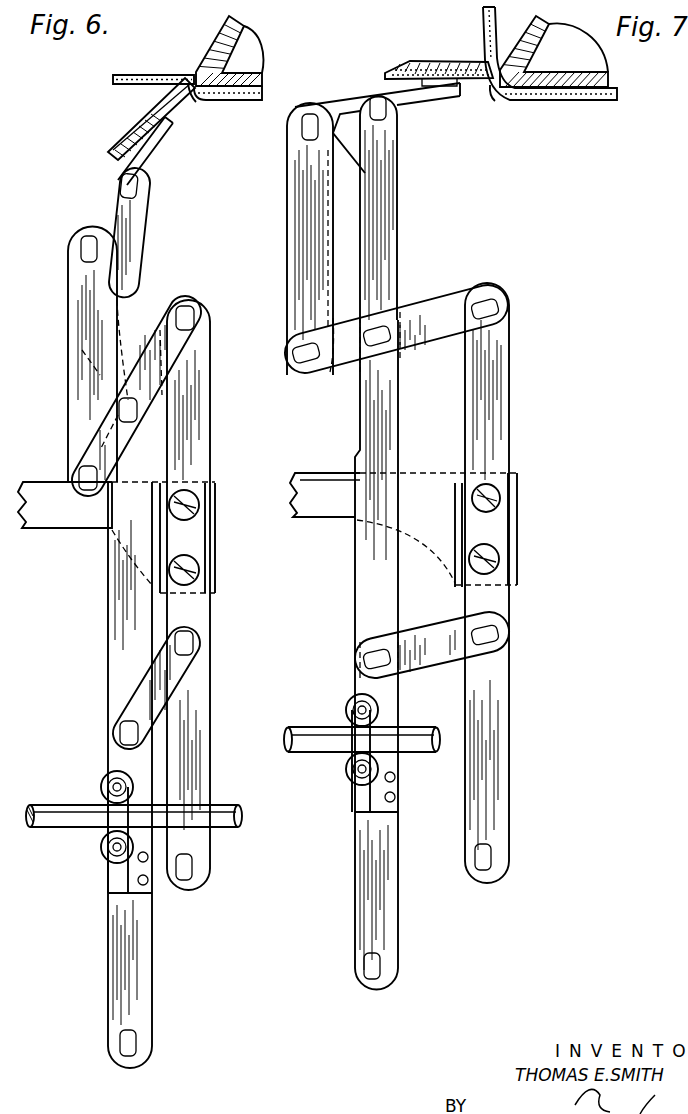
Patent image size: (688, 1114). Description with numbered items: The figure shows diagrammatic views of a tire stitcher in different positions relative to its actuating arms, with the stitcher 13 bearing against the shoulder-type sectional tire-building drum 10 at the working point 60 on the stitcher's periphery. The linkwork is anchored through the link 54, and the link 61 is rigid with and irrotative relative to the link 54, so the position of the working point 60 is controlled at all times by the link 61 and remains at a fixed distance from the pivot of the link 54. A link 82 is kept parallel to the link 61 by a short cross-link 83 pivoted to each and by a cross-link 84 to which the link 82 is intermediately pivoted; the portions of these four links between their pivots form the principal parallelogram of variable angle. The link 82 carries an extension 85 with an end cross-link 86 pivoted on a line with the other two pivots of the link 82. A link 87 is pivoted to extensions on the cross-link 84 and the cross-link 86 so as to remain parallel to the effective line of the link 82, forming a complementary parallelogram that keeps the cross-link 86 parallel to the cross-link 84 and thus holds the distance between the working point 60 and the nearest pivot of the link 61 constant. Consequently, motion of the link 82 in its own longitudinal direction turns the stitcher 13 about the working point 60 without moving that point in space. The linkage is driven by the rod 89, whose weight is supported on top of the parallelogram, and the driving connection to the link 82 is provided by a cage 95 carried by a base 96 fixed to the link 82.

In FIG. 6, the tire-building drum 10 is at (232, 48).
In FIG. 7, the tire-building drum 10 is at (545, 36).
In FIG. 6, the stitcher 13 is at (128, 120).
In FIG. 7, the stitcher 13 is at (423, 66).
In FIG. 6, the link 54 is at (40, 481).
In FIG. 7, the link 54 is at (328, 473).
In FIG. 6, the working point 60 is at (192, 90).
In FIG. 7, the working point 60 is at (492, 88).
In FIG. 6, the link 61 is at (200, 393).
In FIG. 7, the link 61 is at (500, 368).
In FIG. 6, the link 82 is at (108, 650).
In FIG. 7, the link 82 is at (390, 437).
In FIG. 6, the cross-link 83 is at (185, 667).
In FIG. 7, the cross-link 83 is at (452, 653).
In FIG. 6, the cross-link 84 is at (160, 328).
In FIG. 7, the cross-link 84 is at (450, 303).
In FIG. 6, the extension 85 is at (119, 256).
In FIG. 7, the extension 85 is at (362, 236).
In FIG. 6, the end cross-link 86 is at (150, 148).
In FIG. 7, the end cross-link 86 is at (413, 97).
In FIG. 6, the link 87 is at (72, 318).
In FIG. 7, the link 87 is at (290, 262).
In FIG. 6, the rod 89 is at (218, 806).
In FIG. 7, the rod 89 is at (313, 727).
In FIG. 6, the cage 95 is at (110, 812).
In FIG. 7, the cage 95 is at (357, 732).
In FIG. 6, the base 96 is at (148, 882).
In FIG. 7, the base 96 is at (397, 785).